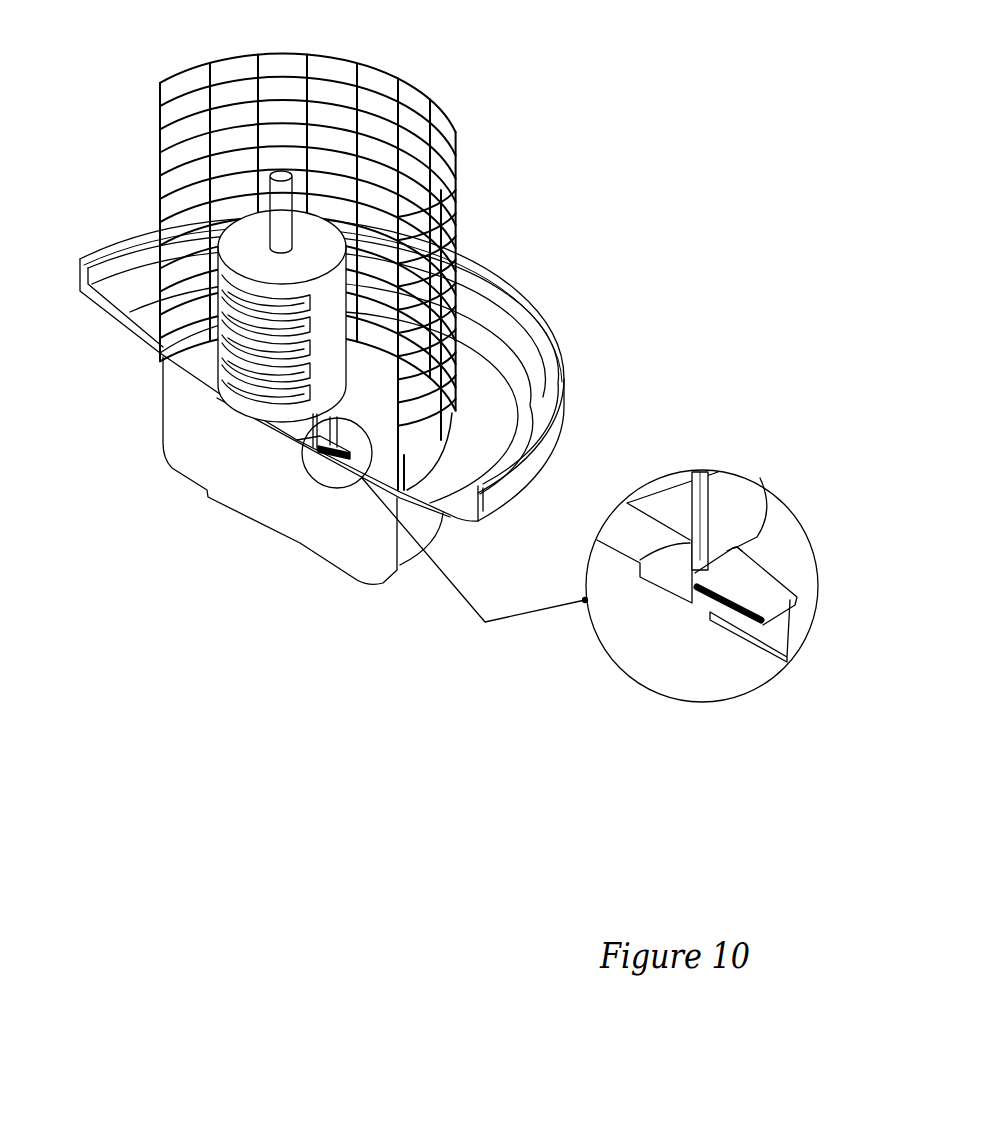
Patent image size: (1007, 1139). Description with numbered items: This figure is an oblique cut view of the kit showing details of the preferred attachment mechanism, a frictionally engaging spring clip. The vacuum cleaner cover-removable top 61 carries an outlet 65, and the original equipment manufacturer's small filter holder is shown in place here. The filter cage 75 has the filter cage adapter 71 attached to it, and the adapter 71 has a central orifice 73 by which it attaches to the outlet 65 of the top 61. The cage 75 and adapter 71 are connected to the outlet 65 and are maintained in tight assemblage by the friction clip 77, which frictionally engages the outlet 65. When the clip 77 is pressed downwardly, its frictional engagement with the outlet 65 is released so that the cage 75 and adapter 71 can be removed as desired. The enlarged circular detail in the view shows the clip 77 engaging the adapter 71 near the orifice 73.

The vacuum cleaner cover-removable top 61 is at (537, 463).
The outlet 65 is at (313, 457).
The filter cage adapter 71 is at (478, 385).
The central orifice 73 is at (757, 537).
The filter cage 75 is at (440, 107).
The friction clip 77 is at (337, 460).